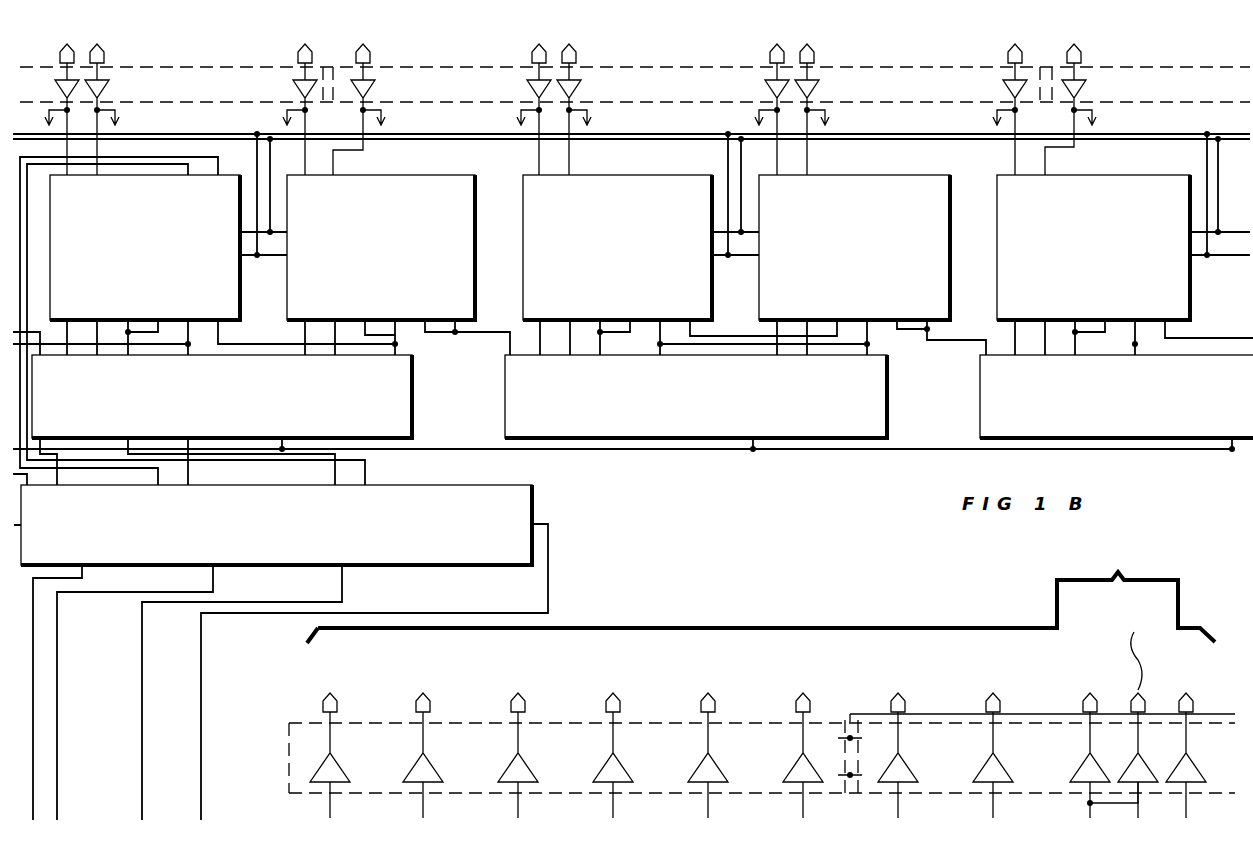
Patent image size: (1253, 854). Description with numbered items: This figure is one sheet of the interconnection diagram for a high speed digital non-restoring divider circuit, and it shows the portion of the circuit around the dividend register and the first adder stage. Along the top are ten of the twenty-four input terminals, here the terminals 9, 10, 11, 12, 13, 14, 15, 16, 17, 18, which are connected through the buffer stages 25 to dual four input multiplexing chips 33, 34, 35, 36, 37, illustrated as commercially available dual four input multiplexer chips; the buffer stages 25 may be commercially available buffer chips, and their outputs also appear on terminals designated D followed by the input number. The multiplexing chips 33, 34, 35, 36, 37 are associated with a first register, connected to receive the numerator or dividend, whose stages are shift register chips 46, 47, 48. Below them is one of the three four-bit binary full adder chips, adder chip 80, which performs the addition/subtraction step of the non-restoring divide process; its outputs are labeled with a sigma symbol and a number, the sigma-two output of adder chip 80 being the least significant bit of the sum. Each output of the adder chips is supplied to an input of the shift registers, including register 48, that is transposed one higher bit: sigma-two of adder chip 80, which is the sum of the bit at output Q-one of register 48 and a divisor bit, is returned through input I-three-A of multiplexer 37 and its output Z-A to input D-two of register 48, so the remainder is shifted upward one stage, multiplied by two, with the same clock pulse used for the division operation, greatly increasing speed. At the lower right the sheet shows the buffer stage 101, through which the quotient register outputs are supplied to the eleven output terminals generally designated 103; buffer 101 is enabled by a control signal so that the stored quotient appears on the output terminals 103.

The input terminal 9 is at (48, 105).
The input terminal 10 is at (120, 105).
The input terminal 11 is at (280, 105).
The input terminal 12 is at (377, 105).
The input terminal 13 is at (514, 105).
The input terminal 14 is at (592, 105).
The input terminal 15 is at (752, 105).
The input terminal 16 is at (830, 105).
The input terminal 17 is at (990, 105).
The input terminal 18 is at (1089, 105).
The buffer stages 25 is at (193, 52).
The dual four input multiplexing chip 33 is at (1155, 170).
The dual four input multiplexing chip 34 is at (917, 170).
The dual four input multiplexing chip 35 is at (679, 170).
The dual four input multiplexing chip 36 is at (457, 170).
The dual four input multiplexing chip 37 is at (240, 283).
The shift register chip 46 is at (980, 392).
The shift register chip 47 is at (887, 412).
The shift register chip 48 is at (412, 412).
The 4-bit binary full adder chip 80 is at (493, 566).
The buffer stage 101 is at (289, 723).
The output terminals 103 is at (761, 582).